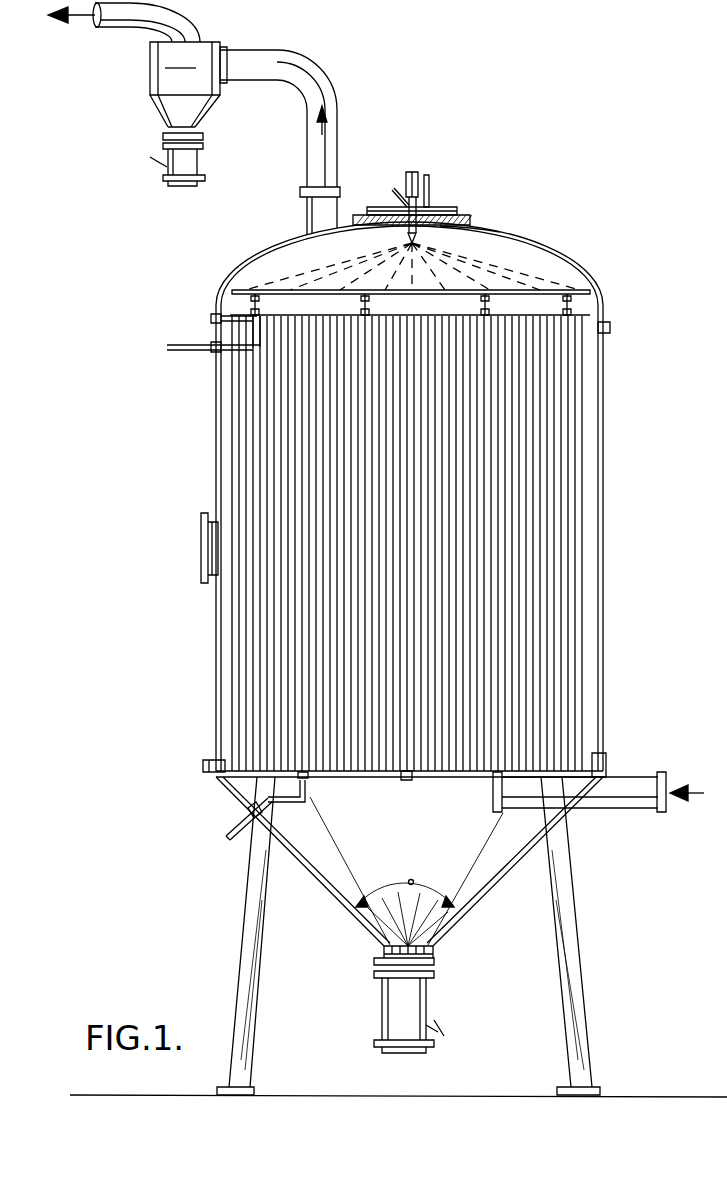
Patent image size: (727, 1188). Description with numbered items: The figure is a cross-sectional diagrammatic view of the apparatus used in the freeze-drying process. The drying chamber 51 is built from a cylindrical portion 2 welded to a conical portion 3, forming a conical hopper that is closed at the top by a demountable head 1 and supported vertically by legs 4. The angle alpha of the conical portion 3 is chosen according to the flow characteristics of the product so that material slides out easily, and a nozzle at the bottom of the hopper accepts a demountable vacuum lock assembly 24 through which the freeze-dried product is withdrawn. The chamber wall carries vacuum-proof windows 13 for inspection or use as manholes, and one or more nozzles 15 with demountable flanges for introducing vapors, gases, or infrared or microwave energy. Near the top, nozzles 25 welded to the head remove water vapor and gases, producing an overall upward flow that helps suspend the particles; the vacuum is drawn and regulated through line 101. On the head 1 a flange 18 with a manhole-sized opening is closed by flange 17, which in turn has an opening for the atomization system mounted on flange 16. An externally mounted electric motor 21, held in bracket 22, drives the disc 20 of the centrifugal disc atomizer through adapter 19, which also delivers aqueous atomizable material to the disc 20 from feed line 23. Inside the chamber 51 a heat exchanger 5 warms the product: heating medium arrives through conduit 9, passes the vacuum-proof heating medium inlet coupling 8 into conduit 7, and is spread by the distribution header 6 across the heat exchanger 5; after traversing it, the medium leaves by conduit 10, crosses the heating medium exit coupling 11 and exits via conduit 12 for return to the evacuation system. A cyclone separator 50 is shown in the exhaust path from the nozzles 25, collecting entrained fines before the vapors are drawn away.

The demountable head 1 is at (258, 250).
The cylindrical portion 2 is at (214, 704).
The conical portion 3 is at (314, 877).
The legs 4 is at (247, 949).
The heat exchanger 5 is at (410, 781).
The distribution header 6 is at (546, 293).
The conduit 7 is at (262, 332).
The heating medium inlet coupling 8 is at (212, 352).
The conduit 9 is at (200, 344).
The conduit 10 is at (306, 792).
The heating medium exit coupling 11 is at (250, 810).
The conduit 12 is at (228, 830).
The vacuum-proof windows 13 is at (200, 548).
The nozzles 15 is at (627, 808).
The flange 16 is at (457, 207).
The flange 17 is at (470, 215).
The flange 18 is at (372, 182).
The adapter 19 is at (418, 238).
The disc 20 is at (478, 233).
The electric motor 21 is at (412, 172).
The bracket 22 is at (427, 175).
The feed line 23 is at (394, 188).
The demountable vacuum lock assembly 24 is at (432, 1008).
The nozzles 25 is at (307, 217).
The cyclone separator 50 is at (185, 114).
The drying chamber 51 is at (604, 490).
The line 101 is at (135, 20).